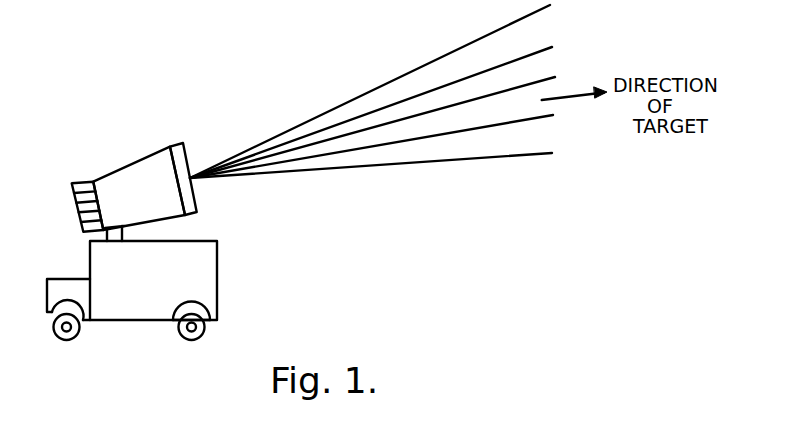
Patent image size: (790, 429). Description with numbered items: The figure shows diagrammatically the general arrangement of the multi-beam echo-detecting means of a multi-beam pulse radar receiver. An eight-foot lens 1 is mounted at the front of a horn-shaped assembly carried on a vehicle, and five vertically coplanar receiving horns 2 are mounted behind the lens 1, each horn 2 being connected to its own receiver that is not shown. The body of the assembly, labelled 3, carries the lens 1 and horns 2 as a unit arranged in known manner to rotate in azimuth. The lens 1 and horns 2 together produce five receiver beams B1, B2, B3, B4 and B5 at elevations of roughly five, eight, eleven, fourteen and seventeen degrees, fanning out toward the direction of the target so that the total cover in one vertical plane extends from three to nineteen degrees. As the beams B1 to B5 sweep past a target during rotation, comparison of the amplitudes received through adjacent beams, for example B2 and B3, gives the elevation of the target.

The lens 1 is at (182, 142).
The receiving horns 2 is at (78, 218).
The horn antenna 3 is at (127, 166).
The receiver beam B1 is at (386, 161).
The receiver beam B2 is at (386, 140).
The receiver beam B3 is at (386, 121).
The receiver beam B4 is at (385, 107).
The receiver beam B5 is at (385, 89).